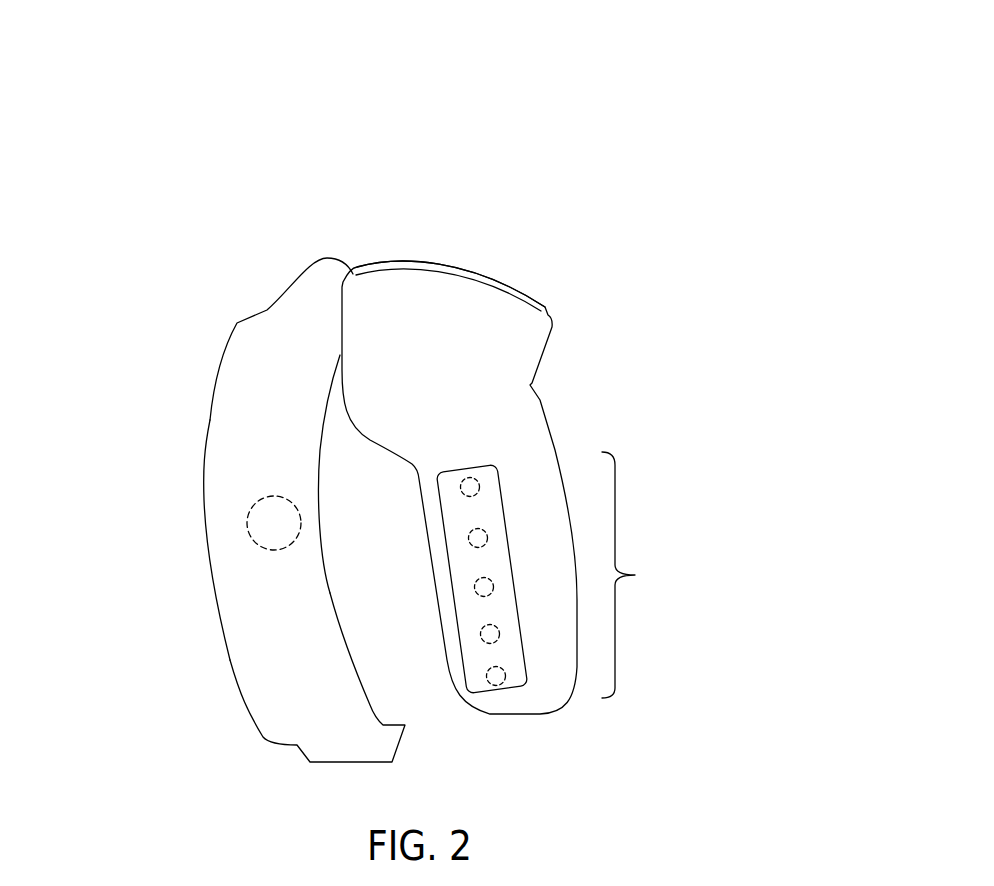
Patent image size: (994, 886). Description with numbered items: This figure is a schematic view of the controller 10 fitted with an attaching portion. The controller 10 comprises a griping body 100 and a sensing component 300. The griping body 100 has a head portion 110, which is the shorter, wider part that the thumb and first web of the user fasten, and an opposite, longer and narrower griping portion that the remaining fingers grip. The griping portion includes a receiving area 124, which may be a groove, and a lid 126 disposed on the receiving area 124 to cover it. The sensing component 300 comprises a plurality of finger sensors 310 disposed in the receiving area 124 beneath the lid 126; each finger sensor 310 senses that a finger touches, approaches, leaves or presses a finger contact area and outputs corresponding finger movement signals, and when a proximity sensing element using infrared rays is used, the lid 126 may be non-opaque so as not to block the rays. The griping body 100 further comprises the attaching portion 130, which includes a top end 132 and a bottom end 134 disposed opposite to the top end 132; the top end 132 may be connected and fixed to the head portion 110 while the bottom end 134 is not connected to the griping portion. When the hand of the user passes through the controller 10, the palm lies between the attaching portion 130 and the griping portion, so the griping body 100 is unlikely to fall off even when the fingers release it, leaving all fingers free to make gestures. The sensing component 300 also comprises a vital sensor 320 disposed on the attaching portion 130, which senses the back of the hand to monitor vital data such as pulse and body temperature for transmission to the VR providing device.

The controller 10 is at (673, 45).
The griping body 100 is at (628, 348).
The head portion 110 is at (400, 298).
The receiving area 124 is at (641, 575).
The lid 126 is at (513, 690).
The attaching portion 130 is at (151, 498).
The top end 132 is at (260, 340).
The bottom end 134 is at (267, 697).
The sensing component 300 is at (655, 684).
The finger sensor 310 is at (473, 493).
The vital sensor 320 is at (257, 543).